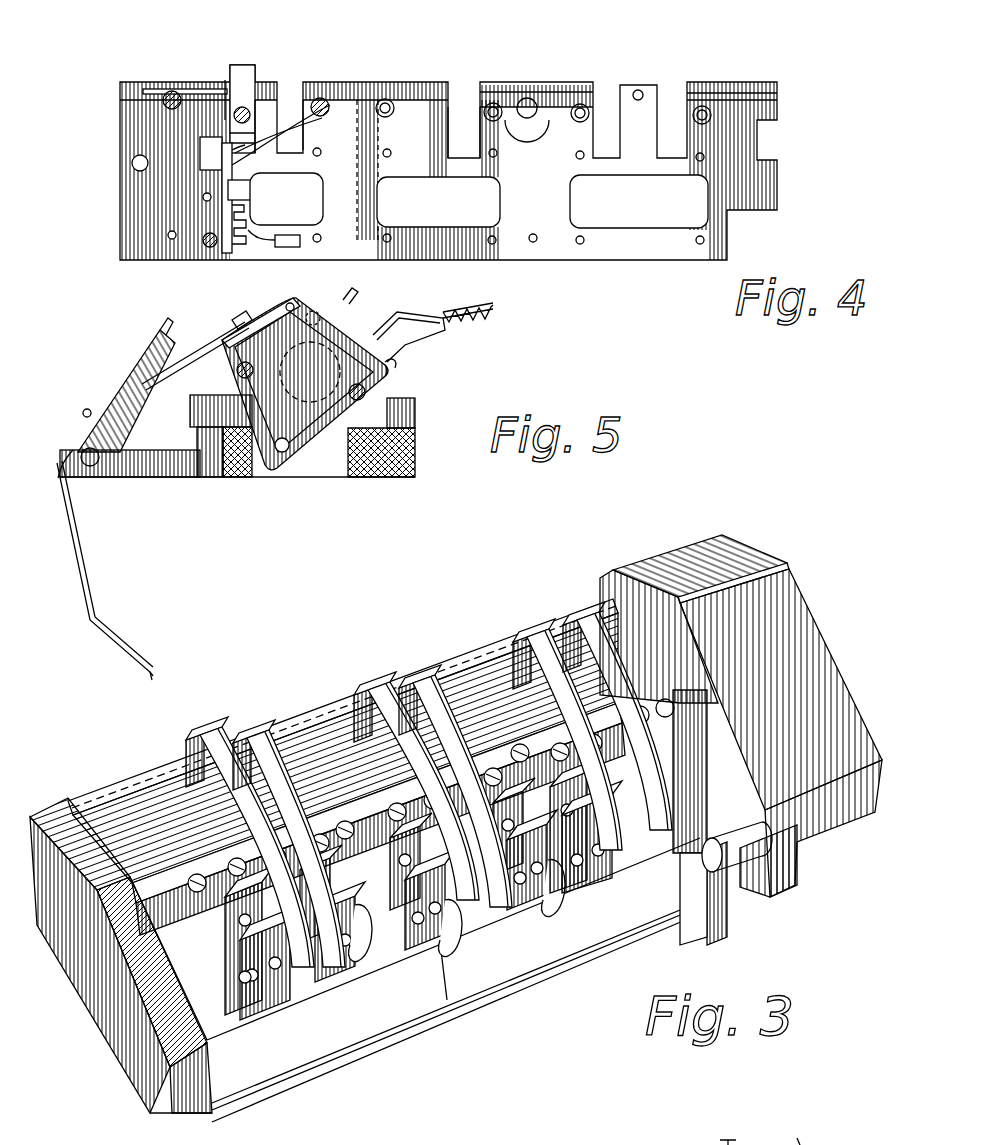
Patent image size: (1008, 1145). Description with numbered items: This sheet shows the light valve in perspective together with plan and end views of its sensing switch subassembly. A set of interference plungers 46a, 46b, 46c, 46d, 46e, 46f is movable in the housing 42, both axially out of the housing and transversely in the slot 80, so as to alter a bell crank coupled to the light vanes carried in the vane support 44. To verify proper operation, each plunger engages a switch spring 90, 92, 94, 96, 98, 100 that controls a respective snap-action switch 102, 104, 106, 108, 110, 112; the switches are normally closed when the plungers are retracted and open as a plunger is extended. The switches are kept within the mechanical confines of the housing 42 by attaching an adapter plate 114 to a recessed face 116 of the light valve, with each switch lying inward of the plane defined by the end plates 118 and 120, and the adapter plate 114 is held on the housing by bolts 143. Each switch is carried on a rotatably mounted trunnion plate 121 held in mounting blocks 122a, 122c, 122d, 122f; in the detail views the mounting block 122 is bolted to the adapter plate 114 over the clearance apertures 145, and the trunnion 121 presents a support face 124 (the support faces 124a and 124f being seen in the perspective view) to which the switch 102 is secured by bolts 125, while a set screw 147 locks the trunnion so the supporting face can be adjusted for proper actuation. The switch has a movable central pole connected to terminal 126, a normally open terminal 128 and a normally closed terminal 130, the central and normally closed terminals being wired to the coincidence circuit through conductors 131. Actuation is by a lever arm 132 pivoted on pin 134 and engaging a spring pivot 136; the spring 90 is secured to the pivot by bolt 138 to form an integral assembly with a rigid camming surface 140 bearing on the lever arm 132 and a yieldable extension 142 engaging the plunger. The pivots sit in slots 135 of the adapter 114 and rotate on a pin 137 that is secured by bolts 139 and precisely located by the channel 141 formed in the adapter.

In FIG. 3, the housing 42 is at (82, 985).
In FIG. 3, the vane support 44 is at (805, 607).
In FIG. 3, the plunger 46a is at (200, 758).
In FIG. 3, the plunger 46b is at (235, 730).
In FIG. 3, the plunger 46c is at (354, 696).
In FIG. 3, the plunger 46d is at (404, 680).
In FIG. 3, the plunger 46e is at (513, 642).
In FIG. 3, the plunger 46f is at (565, 622).
In FIG. 3, the slot 80 is at (140, 818).
In FIG. 4, the switch spring 90 is at (255, 70).
In FIG. 5, the switch spring 90 is at (80, 545).
In FIG. 3, the switch spring 90 is at (205, 727).
In FIG. 3, the switch spring 92 is at (270, 727).
In FIG. 3, the switch spring 94 is at (360, 684).
In FIG. 3, the switch spring 96 is at (413, 675).
In FIG. 3, the switch spring 98 is at (518, 632).
In FIG. 3, the switch spring 100 is at (572, 612).
In FIG. 4, the snap-action switch 102 is at (258, 210).
In FIG. 5, the snap-action switch 102 is at (305, 468).
In FIG. 3, the snap-action switch 102 is at (310, 977).
In FIG. 3, the snap-action switch 104 is at (353, 953).
In FIG. 3, the snap-action switch 106 is at (447, 940).
In FIG. 3, the snap-action switch 108 is at (493, 927).
In FIG. 3, the snap-action switch 110 is at (632, 882).
In FIG. 3, the snap-action switch 112 is at (660, 857).
In FIG. 4, the adapter plate 114 is at (125, 118).
In FIG. 5, the adapter plate 114 is at (385, 470).
In FIG. 3, the adapter plate 114 is at (170, 887).
In FIG. 3, the recessed face 116 is at (210, 955).
In FIG. 3, the end plate 118 is at (163, 1007).
In FIG. 5, the end plate 120 is at (409, 337).
In FIG. 3, the end plate 120 is at (753, 733).
In FIG. 5, the trunnion plate 121 is at (280, 300).
In FIG. 3, the trunnion plate 121 is at (240, 977).
In FIG. 4, the mounting block 122 is at (205, 180).
In FIG. 5, the mounting block 122 is at (410, 400).
In FIG. 3, the mounting block 122a is at (237, 1017).
In FIG. 3, the mounting block 122c is at (447, 1023).
In FIG. 3, the mounting block 122d is at (545, 900).
In FIG. 3, the mounting block 122f is at (703, 813).
In FIG. 5, the support face 124 is at (388, 372).
In FIG. 3, the support face 124a is at (293, 1000).
In FIG. 3, the support face 124f is at (693, 792).
In FIG. 5, the bolt 125 is at (200, 383).
In FIG. 5, the terminal 126 is at (393, 315).
In FIG. 5, the normally open terminal 128 is at (350, 298).
In FIG. 5, the normally closed terminal 130 is at (400, 362).
In FIG. 4, the conductor 131 is at (285, 250).
In FIG. 5, the conductor 131 is at (490, 322).
In FIG. 4, the lever arm 132 is at (317, 97).
In FIG. 5, the lever arm 132 is at (195, 362).
In FIG. 5, the pin 134 is at (243, 316).
In FIG. 4, the slot 135 is at (452, 118).
In FIG. 4, the spring pivot 136 is at (250, 140).
In FIG. 5, the spring pivot 136 is at (112, 390).
In FIG. 4, the pin 137 is at (245, 165).
In FIG. 5, the pin 137 is at (86, 470).
In FIG. 3, the pin 137 is at (337, 820).
In FIG. 4, the bolt 138 is at (227, 84).
In FIG. 5, the bolt 138 is at (84, 414).
In FIG. 4, the bolt 139 is at (172, 92).
In FIG. 3, the bolt 139 is at (210, 860).
In FIG. 5, the camming surface 140 is at (170, 322).
In FIG. 4, the channel 141 is at (641, 90).
In FIG. 5, the channel 141 is at (100, 458).
In FIG. 3, the channel 141 is at (150, 876).
In FIG. 5, the yieldable extension 142 is at (150, 668).
In FIG. 3, the bolt 143 is at (195, 887).
In FIG. 4, the clearance aperture 145 is at (323, 208).
In FIG. 5, the clearance aperture 145 is at (348, 477).
In FIG. 4, the set screw 147 is at (208, 197).
In FIG. 3, the set screw 147 is at (447, 1000).